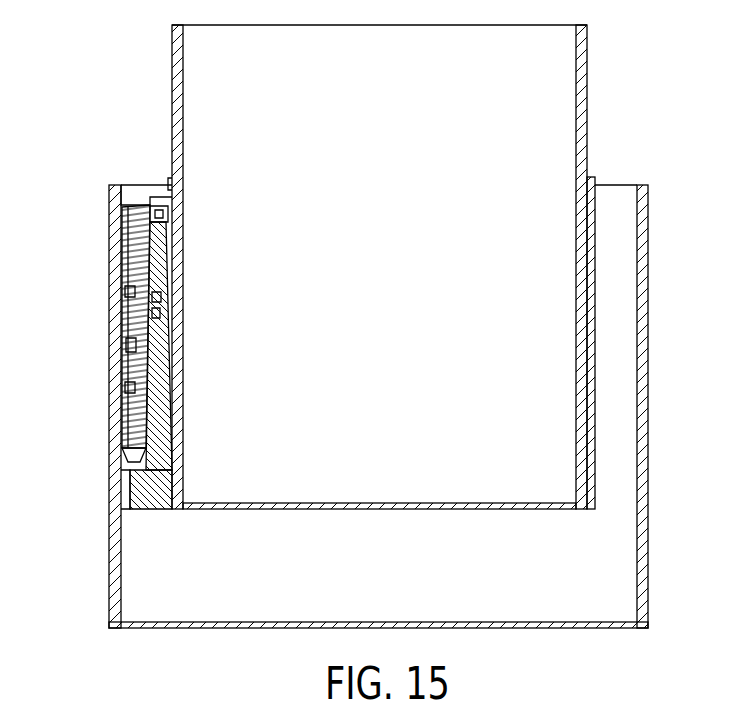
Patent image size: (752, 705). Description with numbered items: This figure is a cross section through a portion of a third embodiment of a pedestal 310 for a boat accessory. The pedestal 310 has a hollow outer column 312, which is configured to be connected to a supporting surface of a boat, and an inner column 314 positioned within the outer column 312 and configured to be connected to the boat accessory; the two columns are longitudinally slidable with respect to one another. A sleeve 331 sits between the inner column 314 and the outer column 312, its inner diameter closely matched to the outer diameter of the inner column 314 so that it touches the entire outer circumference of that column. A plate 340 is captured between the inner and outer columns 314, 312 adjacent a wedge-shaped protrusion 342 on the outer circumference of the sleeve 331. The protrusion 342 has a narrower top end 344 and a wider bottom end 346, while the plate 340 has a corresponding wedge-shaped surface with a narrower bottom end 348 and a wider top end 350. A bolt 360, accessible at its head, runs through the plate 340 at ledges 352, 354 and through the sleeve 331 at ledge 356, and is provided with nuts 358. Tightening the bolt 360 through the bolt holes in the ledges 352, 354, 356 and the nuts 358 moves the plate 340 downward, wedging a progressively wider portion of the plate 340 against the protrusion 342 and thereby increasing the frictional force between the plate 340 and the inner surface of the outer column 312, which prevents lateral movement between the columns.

The pedestal 310 is at (636, 88).
The outer column 312 is at (649, 482).
The inner column 314 is at (592, 152).
The sleeve 331 is at (597, 370).
The plate 340 is at (122, 234).
The wedge-shaped protrusion 342 is at (152, 494).
The narrower top end 344 is at (168, 173).
The wider bottom end 346 is at (128, 489).
The narrower bottom end 348 is at (127, 447).
The wider top end 350 is at (135, 189).
The ledge 352 is at (172, 226).
The ledge 354 is at (166, 374).
The ledge 356 is at (160, 316).
The nuts 358 is at (130, 292).
The bolt 360 is at (132, 346).